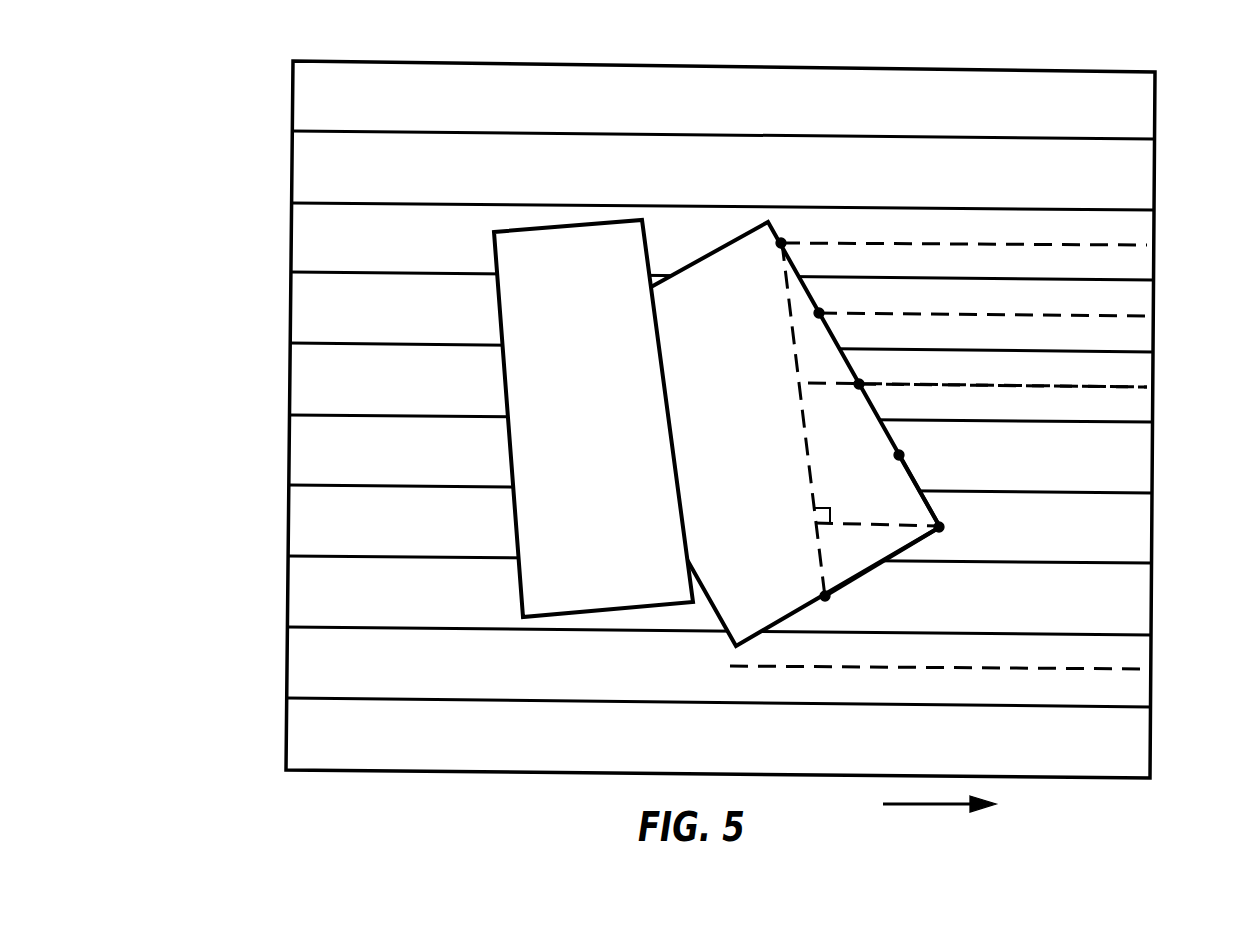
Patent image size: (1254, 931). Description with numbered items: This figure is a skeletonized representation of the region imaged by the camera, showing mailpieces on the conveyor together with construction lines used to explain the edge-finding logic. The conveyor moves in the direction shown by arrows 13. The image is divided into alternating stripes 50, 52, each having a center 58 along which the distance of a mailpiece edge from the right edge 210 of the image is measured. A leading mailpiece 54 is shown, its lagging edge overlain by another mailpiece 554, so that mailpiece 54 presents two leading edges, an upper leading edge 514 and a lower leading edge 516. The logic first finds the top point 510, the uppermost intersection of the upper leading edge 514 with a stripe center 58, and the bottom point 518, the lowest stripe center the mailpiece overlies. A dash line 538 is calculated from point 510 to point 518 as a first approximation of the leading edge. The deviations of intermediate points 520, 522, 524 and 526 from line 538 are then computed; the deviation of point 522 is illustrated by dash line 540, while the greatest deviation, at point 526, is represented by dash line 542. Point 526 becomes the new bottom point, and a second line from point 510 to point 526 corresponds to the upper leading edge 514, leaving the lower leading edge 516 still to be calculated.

The right edge 210 is at (1146, 100).
The stripe 50 is at (240, 673).
The stripe 52 is at (223, 750).
The mailpiece 54 is at (758, 228).
The mailpiece 554 is at (582, 235).
The center of a stripe 58 is at (1134, 246).
The point 510 is at (785, 240).
The point 520 is at (815, 311).
The point 522 is at (858, 389).
The point 524 is at (902, 454).
The point 526 is at (945, 526).
The point 518 is at (830, 601).
The upper leading edge 514 is at (912, 478).
The lower leading edge 516 is at (878, 572).
The dash line 538 is at (800, 417).
The dash line 540 is at (818, 382).
The dash line 542 is at (830, 517).
The arrows 13 is at (935, 806).